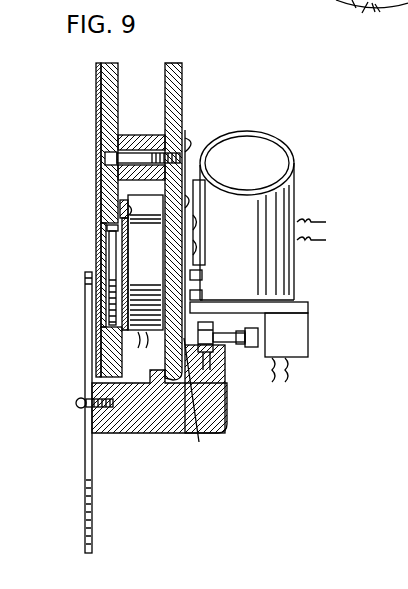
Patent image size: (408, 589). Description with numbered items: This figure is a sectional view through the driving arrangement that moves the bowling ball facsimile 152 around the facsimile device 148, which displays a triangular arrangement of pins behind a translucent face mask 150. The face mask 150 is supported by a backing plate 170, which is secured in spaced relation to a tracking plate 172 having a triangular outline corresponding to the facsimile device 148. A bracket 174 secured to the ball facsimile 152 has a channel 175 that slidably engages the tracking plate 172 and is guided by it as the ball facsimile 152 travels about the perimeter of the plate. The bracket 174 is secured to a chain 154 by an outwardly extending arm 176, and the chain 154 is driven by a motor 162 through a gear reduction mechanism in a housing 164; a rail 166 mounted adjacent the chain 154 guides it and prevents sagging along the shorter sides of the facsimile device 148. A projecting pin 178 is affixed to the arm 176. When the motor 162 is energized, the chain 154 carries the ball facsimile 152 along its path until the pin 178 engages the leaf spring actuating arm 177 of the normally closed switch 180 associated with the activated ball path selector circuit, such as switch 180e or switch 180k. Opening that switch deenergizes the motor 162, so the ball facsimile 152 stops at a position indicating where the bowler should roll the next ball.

The facsimile device 148 is at (92, 92).
The translucent face mask 150 is at (96, 110).
The bowling ball facsimile 152 is at (86, 455).
The chain 154 is at (193, 338).
The motor 162 is at (259, 143).
The housing 164 is at (277, 290).
The rail 166 is at (218, 390).
The backing plate 170 is at (115, 96).
The tracking plate 172 is at (183, 78).
The bracket 174 is at (157, 428).
The channel 175 is at (205, 402).
The arm 176 is at (222, 367).
The actuating arm 177 is at (256, 340).
The pin 178 is at (236, 344).
The switch 180 is at (378, 12).
The switch 180e is at (326, 0).
The switch 180k is at (304, 342).